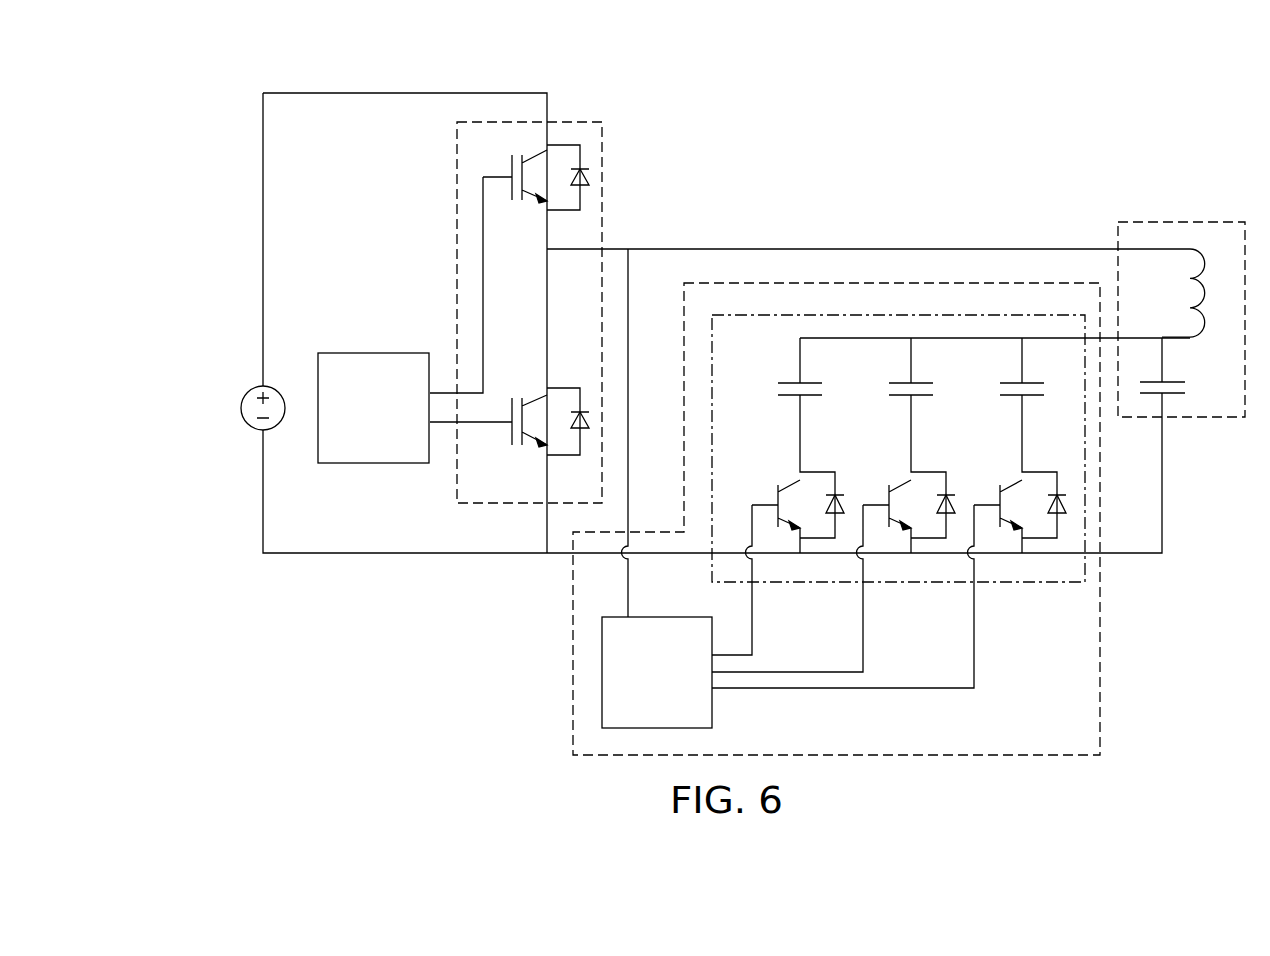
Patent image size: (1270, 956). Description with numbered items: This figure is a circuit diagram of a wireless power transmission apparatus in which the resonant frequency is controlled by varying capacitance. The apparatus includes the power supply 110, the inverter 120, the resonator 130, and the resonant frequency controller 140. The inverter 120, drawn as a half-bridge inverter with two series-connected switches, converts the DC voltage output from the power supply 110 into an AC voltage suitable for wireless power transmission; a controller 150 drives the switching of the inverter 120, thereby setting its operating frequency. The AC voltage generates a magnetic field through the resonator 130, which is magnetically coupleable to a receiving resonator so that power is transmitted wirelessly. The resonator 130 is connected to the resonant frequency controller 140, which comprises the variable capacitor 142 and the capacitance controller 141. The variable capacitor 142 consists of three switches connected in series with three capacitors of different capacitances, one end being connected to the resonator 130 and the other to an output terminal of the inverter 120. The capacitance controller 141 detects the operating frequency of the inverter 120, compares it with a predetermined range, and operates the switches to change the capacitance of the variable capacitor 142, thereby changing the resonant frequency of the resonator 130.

The power supply 110 is at (240, 408).
The inverter 120 is at (580, 122).
The resonator 130 is at (1200, 222).
The resonant frequency controller 140 is at (1102, 647).
The capacitance controller 141 is at (657, 672).
The variable capacitor 142 is at (1050, 584).
The switch controller 150 is at (373, 408).